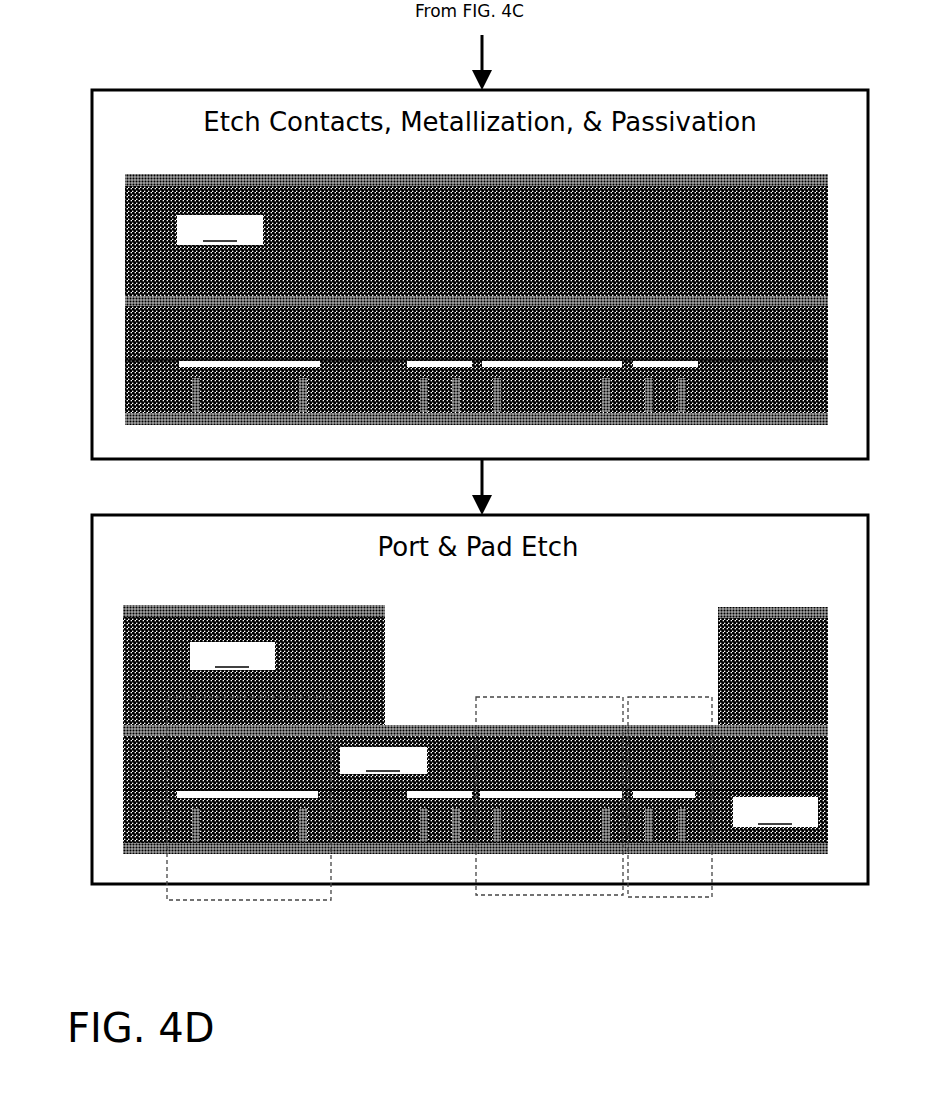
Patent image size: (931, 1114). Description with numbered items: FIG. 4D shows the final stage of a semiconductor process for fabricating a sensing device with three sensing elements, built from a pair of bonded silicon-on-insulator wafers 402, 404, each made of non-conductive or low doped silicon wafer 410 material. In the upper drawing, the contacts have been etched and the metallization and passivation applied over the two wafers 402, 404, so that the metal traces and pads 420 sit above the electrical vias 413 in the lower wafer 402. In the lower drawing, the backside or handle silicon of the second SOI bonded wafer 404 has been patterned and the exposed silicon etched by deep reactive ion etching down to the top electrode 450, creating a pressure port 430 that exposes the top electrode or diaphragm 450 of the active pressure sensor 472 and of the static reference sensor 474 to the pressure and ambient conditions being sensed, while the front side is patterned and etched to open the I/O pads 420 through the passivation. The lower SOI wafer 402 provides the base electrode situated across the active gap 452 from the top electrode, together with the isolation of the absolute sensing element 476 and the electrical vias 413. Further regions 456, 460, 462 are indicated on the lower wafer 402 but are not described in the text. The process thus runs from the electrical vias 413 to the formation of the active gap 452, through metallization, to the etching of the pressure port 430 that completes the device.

The SOI wafer 402 is at (125, 370).
The second SOI bonded wafer 404 is at (125, 270).
The low doped silicon wafer 410 is at (497, 521).
The electrical vias 413 is at (497, 846).
The metal traces and pads 420 is at (440, 426).
The pressure port 430 is at (566, 622).
The top electrode 450 is at (475, 763).
The active gap 452 is at (532, 792).
The inter-layer region 456 is at (582, 822).
The via 460 is at (497, 805).
The via 462 is at (610, 818).
The active pressure sensor 472 is at (558, 697).
The static reference sensor 474 is at (687, 897).
The absolute sensing element 476 is at (232, 900).